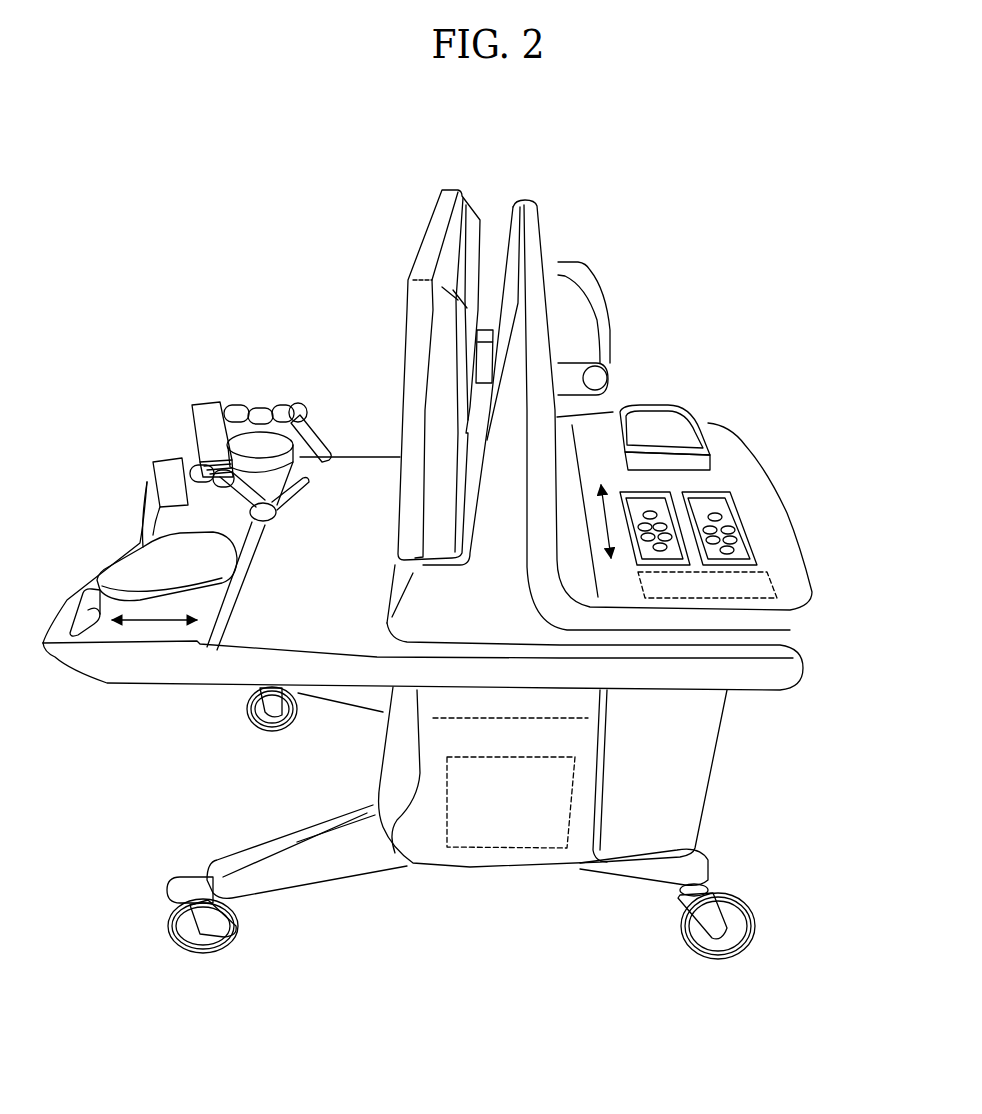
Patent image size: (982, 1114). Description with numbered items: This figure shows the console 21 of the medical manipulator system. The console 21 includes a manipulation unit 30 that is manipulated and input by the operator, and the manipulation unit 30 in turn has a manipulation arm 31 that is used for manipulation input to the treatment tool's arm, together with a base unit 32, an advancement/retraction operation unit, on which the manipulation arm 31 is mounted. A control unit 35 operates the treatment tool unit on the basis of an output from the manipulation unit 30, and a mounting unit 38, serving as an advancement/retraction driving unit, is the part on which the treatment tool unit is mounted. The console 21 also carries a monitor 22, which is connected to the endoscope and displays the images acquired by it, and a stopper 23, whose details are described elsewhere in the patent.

The console 21 is at (735, 355).
The monitor 22 is at (433, 240).
The stopper 23 is at (777, 585).
The manipulation unit 30 is at (208, 388).
The manipulation arm 31 is at (297, 405).
The base unit 32 is at (122, 565).
The control unit 35 is at (505, 848).
The mounting unit 38 is at (723, 537).